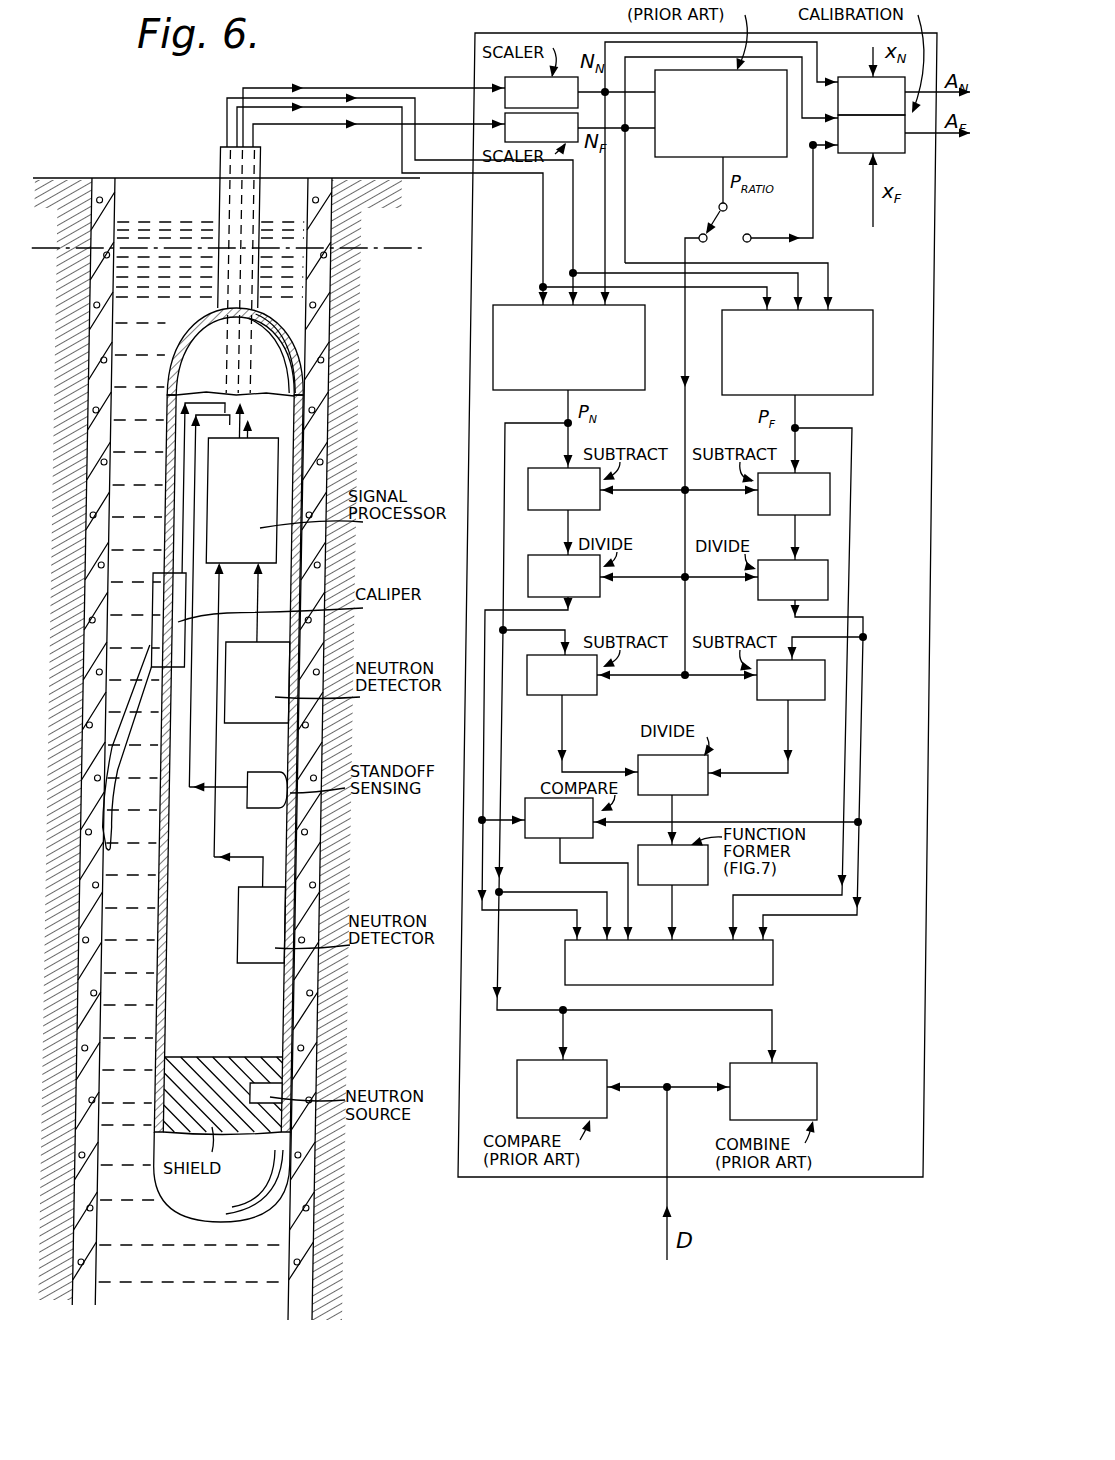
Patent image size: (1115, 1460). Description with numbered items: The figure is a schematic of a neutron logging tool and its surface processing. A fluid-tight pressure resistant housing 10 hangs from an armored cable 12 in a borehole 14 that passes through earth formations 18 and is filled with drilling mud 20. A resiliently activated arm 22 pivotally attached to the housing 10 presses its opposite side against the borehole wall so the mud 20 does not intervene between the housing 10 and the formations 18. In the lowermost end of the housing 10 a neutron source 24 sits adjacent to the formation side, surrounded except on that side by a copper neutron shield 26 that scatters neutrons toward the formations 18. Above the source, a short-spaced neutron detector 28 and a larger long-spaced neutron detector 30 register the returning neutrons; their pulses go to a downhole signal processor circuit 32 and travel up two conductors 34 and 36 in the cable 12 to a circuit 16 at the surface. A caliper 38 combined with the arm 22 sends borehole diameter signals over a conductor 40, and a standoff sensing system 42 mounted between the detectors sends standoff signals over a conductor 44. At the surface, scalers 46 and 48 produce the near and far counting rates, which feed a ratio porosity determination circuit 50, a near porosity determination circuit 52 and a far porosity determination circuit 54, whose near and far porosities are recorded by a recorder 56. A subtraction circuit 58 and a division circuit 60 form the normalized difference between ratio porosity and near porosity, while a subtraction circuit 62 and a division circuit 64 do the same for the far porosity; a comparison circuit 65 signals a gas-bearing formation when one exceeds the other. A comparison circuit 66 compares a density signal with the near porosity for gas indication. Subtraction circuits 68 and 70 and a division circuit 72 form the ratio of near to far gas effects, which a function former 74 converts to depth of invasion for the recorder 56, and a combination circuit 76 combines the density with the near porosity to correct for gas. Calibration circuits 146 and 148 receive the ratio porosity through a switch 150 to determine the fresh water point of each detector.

The housing 10 is at (187, 323).
The armored cable 12 is at (218, 160).
The borehole 14 is at (117, 428).
The surface circuit 16 is at (478, 38).
The earth formations 18 is at (64, 502).
The drilling mud 20 is at (120, 938).
The resiliently activated arm 22 is at (117, 733).
The neutron source 24 is at (270, 1082).
The copper neutron shield 26 is at (181, 1060).
The short-spaced neutron detector 28 is at (261, 925).
The long-spaced neutron detector 30 is at (271, 694).
The downhole signal processor circuit 32 is at (246, 522).
The conductor 34 is at (232, 440).
The conductor 36 is at (250, 403).
The caliper 38 is at (180, 592).
The conductor 40 is at (230, 686).
The standoff sensing system 42 is at (258, 792).
The conductor 44 is at (188, 358).
The scaler 46 is at (580, 92).
The scaler 48 is at (580, 128).
The ratio porosity determination circuit 50 is at (672, 160).
The near porosity determination circuit 52 is at (493, 330).
The far porosity determination circuit 54 is at (873, 325).
The recorder 56 is at (777, 956).
The subtraction circuit 58 is at (643, 511).
The division circuit 60 is at (643, 576).
The subtraction circuit 62 is at (794, 516).
The division circuit 64 is at (793, 580).
The comparison circuit 65 is at (670, 869).
The comparison circuit 66 is at (623, 1089).
The subtraction circuit 68 is at (642, 716).
The subtraction circuit 70 is at (766, 719).
The division circuit 72 is at (673, 800).
The function former 74 is at (673, 892).
The combination circuit 76 is at (773, 1091).
The calibration circuit 146 is at (786, 173).
The calibration circuit 148 is at (797, 160).
The switch 150 is at (716, 212).